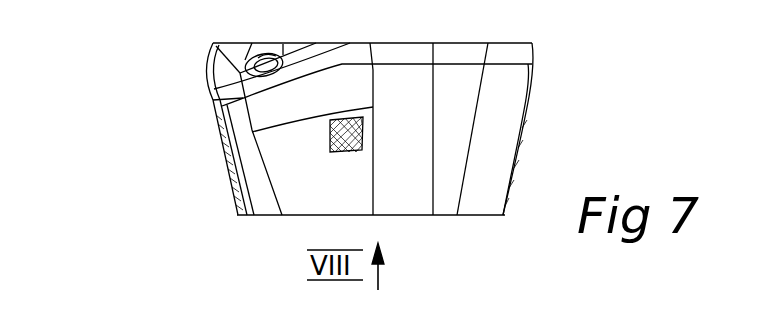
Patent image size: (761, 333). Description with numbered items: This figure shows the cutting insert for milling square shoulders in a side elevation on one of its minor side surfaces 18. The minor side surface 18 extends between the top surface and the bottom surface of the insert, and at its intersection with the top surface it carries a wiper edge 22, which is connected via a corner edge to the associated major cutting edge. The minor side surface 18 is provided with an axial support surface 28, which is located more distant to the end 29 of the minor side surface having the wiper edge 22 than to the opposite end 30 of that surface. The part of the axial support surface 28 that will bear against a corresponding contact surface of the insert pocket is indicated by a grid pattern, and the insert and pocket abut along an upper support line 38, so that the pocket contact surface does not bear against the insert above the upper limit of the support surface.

The minor side surface 18 is at (415, 213).
The wiper edge 22 is at (532, 43).
The axial support surface 28 is at (302, 188).
The end of minor side surface having a wiper edge 29 is at (526, 65).
The opposite end of minor side surface 30 is at (208, 52).
The upper support line 38 is at (349, 117).